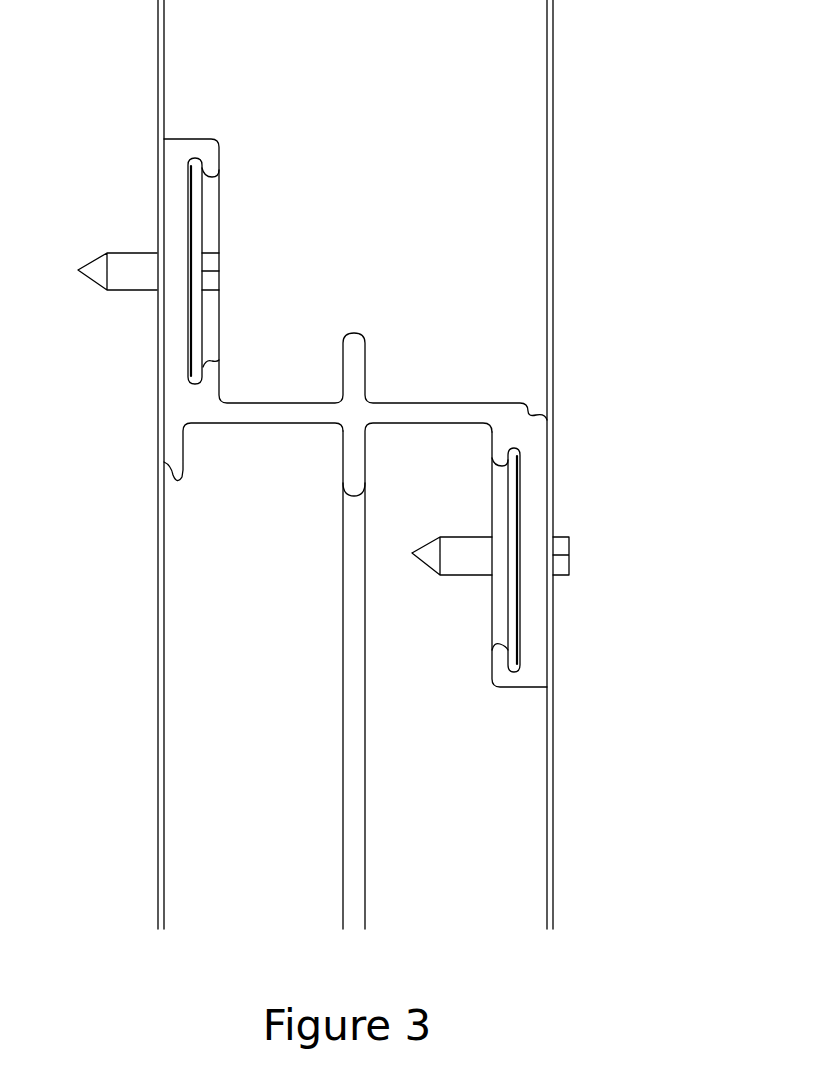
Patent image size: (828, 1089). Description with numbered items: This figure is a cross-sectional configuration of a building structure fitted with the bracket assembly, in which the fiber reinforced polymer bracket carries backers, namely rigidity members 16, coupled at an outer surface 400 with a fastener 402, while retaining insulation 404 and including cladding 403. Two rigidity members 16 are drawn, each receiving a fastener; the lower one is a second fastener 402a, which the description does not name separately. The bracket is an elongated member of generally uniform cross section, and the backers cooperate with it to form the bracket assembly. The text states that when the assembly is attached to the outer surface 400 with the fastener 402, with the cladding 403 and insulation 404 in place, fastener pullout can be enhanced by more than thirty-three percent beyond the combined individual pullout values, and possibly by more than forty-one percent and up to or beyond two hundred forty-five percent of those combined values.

The outer surface 400 is at (150, 123).
The fastener 402 is at (133, 246).
The screw 402a is at (577, 540).
The rigidity member 16 is at (226, 324).
The insulation 404 is at (515, 173).
The cladding 403 is at (554, 344).